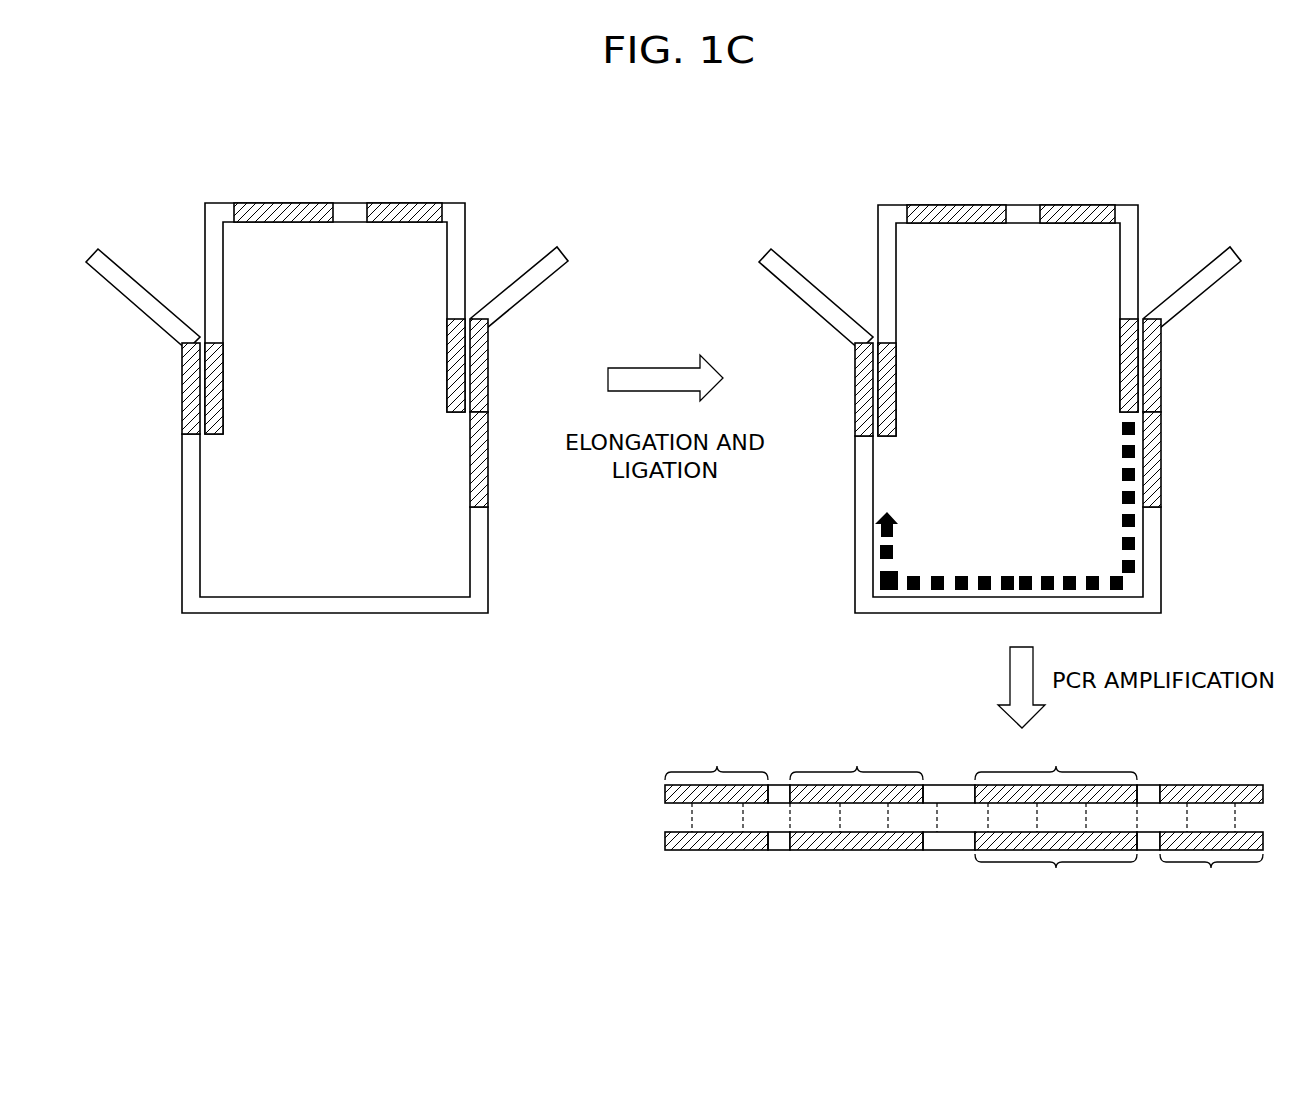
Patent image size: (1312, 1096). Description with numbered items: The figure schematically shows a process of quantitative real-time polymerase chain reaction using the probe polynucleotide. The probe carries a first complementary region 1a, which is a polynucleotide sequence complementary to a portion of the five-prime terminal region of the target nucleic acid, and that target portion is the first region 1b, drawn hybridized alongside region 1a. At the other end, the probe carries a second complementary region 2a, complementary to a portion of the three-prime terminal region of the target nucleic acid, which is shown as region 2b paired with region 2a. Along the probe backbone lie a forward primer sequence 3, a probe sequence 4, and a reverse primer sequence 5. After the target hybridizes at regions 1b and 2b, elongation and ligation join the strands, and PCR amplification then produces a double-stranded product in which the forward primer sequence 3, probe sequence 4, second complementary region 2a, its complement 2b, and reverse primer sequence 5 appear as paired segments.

The first complementary region 1a is at (224, 343).
The first region 1b is at (180, 343).
The second complementary region 2a is at (445, 319).
The portion of the 3' terminal region of the target nucleic acid 2b is at (490, 319).
The forward primer sequence 3 is at (333, 196).
The probe sequence 4 is at (442, 196).
The reverse primer sequence 5 is at (490, 412).